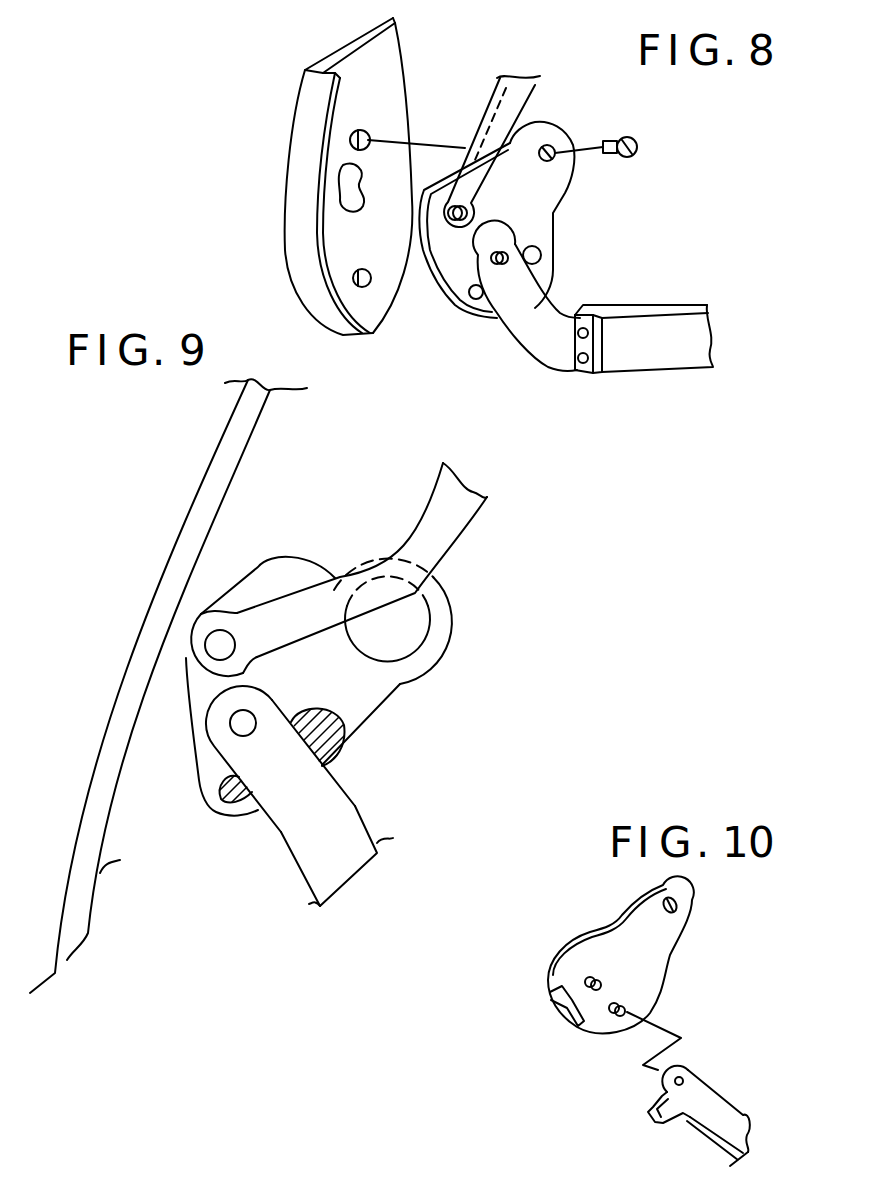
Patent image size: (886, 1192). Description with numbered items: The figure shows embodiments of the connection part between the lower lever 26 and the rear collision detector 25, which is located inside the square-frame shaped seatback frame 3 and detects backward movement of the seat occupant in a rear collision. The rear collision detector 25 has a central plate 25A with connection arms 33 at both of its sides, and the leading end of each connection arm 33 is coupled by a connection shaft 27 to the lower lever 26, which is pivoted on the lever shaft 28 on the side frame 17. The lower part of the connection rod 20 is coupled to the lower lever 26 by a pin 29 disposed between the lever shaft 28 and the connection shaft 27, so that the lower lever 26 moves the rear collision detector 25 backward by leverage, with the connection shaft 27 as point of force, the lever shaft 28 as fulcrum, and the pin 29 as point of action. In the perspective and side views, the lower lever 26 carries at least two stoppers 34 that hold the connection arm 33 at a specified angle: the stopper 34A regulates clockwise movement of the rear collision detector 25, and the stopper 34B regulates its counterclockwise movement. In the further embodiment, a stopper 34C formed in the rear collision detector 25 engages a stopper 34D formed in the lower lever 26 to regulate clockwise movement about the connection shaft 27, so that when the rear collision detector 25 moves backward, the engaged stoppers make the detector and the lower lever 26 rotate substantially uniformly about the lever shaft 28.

In FIG. 9, the seatback frame 3 is at (222, 437).
In FIG. 8, the side frame 17 is at (290, 157).
In FIG. 9, the side frame 17 is at (205, 475).
In FIG. 8, the connection rod 20 is at (533, 85).
In FIG. 9, the connection rod 20 is at (437, 527).
In FIG. 8, the rear collision detector 25 is at (623, 316).
In FIG. 9, the rear collision detector 25 is at (342, 805).
In FIG. 10, the rear collision detector 25 is at (699, 1109).
In FIG. 8, the central plate 25A is at (673, 303).
In FIG. 8, the lower lever 26 is at (518, 128).
In FIG. 9, the lower lever 26 is at (293, 556).
In FIG. 10, the lower lever 26 is at (615, 954).
In FIG. 8, the connection shaft 27 is at (507, 263).
In FIG. 9, the connection shaft 27 is at (243, 723).
In FIG. 10, the connection shaft 27 is at (618, 1020).
In FIG. 8, the lever shaft 28 is at (637, 138).
In FIG. 9, the lever shaft 28 is at (408, 625).
In FIG. 8, the pin 29 is at (473, 207).
In FIG. 9, the pin 29 is at (212, 643).
In FIG. 10, the pin 29 is at (592, 978).
In FIG. 8, the connection arm 33 is at (545, 337).
In FIG. 9, the connection arm 33 is at (337, 867).
In FIG. 10, the connection arm 33 is at (757, 1112).
In FIG. 8, the stoppers 34 is at (534, 309).
In FIG. 9, the stoppers 34 is at (344, 820).
In FIG. 8, the stopper 34A is at (476, 292).
In FIG. 9, the stopper 34A is at (234, 812).
In FIG. 8, the stopper 34B is at (538, 260).
In FIG. 9, the stopper 34B is at (340, 737).
In FIG. 10, the stopper 34C is at (652, 1112).
In FIG. 10, the stopper 34D is at (556, 970).